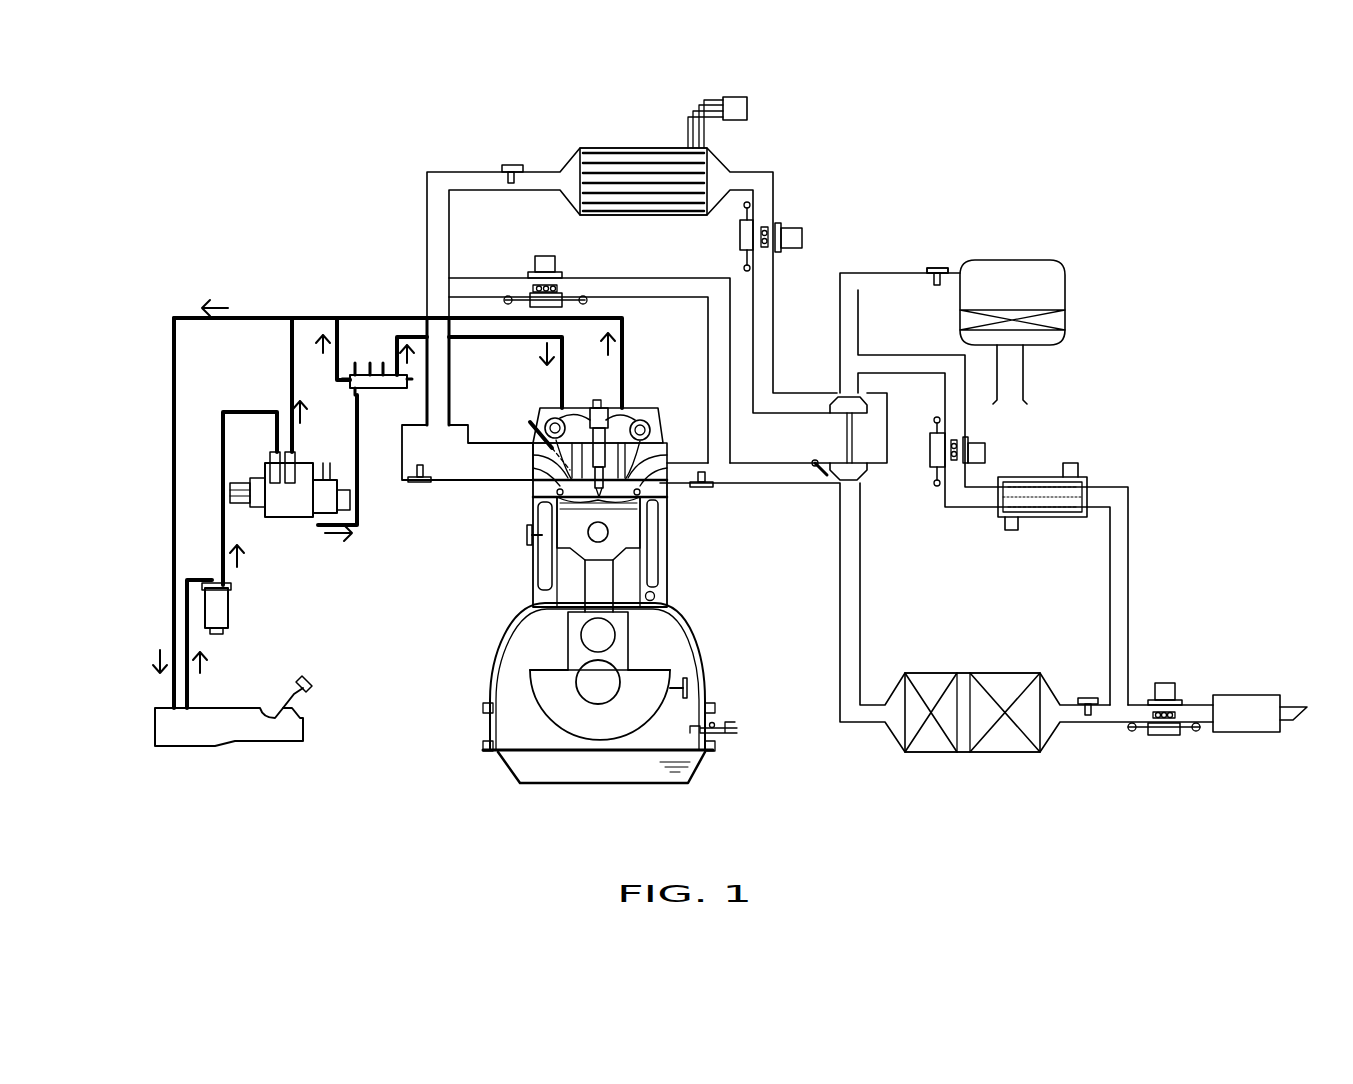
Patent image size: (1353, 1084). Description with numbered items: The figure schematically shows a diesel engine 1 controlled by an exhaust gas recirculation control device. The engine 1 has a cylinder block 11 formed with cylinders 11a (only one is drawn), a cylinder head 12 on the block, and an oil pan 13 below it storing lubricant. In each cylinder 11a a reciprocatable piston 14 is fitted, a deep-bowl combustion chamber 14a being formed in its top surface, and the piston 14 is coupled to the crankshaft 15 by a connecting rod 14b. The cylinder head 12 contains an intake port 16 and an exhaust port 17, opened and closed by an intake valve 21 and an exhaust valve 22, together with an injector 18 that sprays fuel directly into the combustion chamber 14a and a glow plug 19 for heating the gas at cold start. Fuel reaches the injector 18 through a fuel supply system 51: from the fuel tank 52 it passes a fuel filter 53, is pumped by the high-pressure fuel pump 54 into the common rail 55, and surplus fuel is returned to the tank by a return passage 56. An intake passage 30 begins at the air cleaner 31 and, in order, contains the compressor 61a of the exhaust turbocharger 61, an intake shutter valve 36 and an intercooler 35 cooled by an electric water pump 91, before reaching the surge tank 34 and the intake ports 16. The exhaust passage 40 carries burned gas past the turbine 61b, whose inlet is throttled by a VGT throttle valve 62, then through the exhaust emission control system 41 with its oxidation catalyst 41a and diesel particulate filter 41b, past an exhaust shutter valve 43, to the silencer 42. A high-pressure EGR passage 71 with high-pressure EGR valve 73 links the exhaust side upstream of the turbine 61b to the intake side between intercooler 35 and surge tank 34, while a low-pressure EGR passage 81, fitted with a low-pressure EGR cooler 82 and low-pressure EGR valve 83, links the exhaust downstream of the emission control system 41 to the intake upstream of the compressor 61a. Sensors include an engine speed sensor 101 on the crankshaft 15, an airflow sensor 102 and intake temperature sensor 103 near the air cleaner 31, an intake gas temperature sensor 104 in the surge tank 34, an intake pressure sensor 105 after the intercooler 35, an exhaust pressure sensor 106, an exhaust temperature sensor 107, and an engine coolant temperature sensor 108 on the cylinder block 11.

The engine 1 is at (435, 760).
The cylinder block 11 is at (667, 552).
The cylinder 11a is at (656, 585).
The cylinder head 12 is at (660, 440).
The oil pan 13 is at (605, 785).
The piston 14 is at (560, 560).
The combustion chamber 14a is at (612, 517).
The connecting rod 14b is at (575, 588).
The crankshaft 15 is at (598, 700).
The intake port 16 is at (545, 482).
The exhaust port 17 is at (650, 470).
The injector 18 is at (598, 401).
The glow plug 19 is at (540, 425).
The intake valve 21 is at (560, 505).
The exhaust valve 22 is at (641, 497).
The intake passage 30 is at (427, 302).
The air cleaner 31 is at (1012, 305).
The surge tank 34 is at (402, 456).
The intercooler 35 is at (637, 148).
The intake shutter valve 36 is at (762, 228).
The exhaust passage 40 is at (840, 640).
The exhaust emission control system 41 is at (1013, 615).
The oxidation catalyst 41a is at (927, 670).
The diesel particulate filter 41b is at (1004, 670).
The silencer 42 is at (1246, 695).
The exhaust shutter valve 43 is at (1175, 710).
The fuel supply system 51 is at (262, 300).
The fuel tank 52 is at (268, 745).
The fuel filter 53 is at (231, 607).
The high-pressure fuel pump 54 is at (288, 518).
The common rail 55 is at (374, 390).
The return passage 56 is at (324, 318).
The exhaust turbocharger 61 is at (925, 525).
The compressor 61a is at (852, 415).
The turbine 61b is at (858, 475).
The VGT throttle valve 62 is at (813, 460).
The high-pressure EGR passage 71 is at (708, 326).
The high-pressure EGR valve 73 is at (562, 288).
The low-pressure EGR passage 81 is at (1128, 580).
The low-pressure EGR cooler 82 is at (1043, 520).
The low-pressure EGR valve 83 is at (958, 445).
The electric water pump 91 is at (747, 110).
The engine speed sensor 101 is at (688, 688).
The airflow sensor 102 is at (936, 268).
The intake temperature sensor 103 is at (937, 270).
The intake gas temperature sensor 104 is at (420, 483).
The intake pressure sensor 105 is at (511, 165).
The exhaust pressure sensor 106 is at (706, 483).
The exhaust temperature sensor 107 is at (1088, 698).
The engine coolant temperature sensor 108 is at (525, 536).